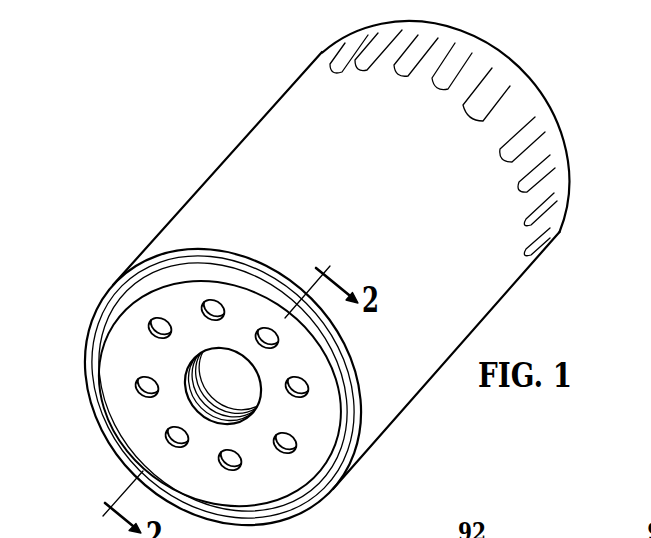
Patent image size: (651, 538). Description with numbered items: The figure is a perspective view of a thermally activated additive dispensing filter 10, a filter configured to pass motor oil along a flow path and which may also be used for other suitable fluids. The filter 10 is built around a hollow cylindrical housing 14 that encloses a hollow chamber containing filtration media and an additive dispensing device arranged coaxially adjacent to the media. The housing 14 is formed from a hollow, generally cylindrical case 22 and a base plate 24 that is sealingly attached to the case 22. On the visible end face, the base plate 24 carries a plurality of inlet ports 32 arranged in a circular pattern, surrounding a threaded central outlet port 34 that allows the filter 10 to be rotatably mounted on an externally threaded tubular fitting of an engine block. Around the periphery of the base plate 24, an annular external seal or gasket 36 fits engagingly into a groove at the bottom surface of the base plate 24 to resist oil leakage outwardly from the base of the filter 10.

The thermally activated additive dispensing filter 10 is at (299, 270).
The hollow cylindrical housing 14 is at (319, 58).
The case 22 is at (215, 172).
The base plate 24 is at (158, 262).
The inlet ports 32 is at (237, 467).
The threaded central outlet port 34 is at (240, 366).
The annular external seal 36 is at (110, 447).